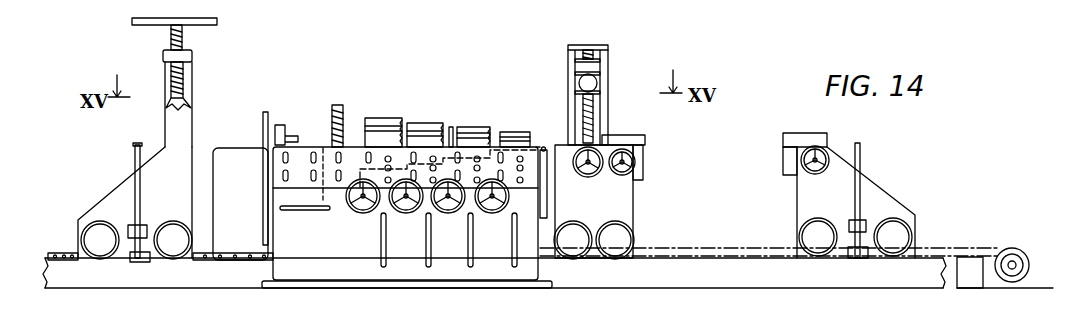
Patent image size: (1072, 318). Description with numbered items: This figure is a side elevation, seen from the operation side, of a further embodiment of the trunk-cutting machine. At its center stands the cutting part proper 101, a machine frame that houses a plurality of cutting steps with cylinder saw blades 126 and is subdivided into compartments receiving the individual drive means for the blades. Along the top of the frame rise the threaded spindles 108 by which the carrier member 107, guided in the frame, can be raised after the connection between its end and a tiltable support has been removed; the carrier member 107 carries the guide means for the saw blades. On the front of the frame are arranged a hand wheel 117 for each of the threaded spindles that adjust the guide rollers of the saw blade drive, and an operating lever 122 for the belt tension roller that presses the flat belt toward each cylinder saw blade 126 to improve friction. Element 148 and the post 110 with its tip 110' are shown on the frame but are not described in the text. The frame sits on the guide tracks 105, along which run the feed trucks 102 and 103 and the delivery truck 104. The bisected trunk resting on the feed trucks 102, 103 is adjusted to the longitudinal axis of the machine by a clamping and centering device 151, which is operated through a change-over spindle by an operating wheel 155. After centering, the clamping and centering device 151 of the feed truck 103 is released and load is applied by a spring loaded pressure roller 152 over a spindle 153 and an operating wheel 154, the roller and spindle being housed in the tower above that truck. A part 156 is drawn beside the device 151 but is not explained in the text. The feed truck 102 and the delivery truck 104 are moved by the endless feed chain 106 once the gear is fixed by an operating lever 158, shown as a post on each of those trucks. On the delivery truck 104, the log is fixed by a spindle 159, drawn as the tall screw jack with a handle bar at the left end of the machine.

The cutting part proper 101 is at (345, 267).
The feed truck 102 is at (848, 202).
The feed truck 103 is at (612, 216).
The delivery truck 104 is at (107, 209).
The guide tracks 105 is at (111, 286).
The endless feed chain 106 is at (971, 259).
The carrier member 107 is at (331, 210).
The threaded spindles 108 is at (333, 115).
The post 110 is at (561, 172).
The post tip 110' is at (548, 132).
The hand wheel 117 is at (357, 209).
The operating lever 122 is at (426, 255).
The cylinder saw blade 126 is at (388, 117).
The block 148 is at (450, 123).
The clamping and centering device 151 is at (627, 135).
The spring loaded pressure roller 152 is at (580, 83).
The spindle 153 is at (583, 101).
The operating wheel 154 is at (586, 177).
The operating wheel 155 is at (619, 176).
The bracket 156 is at (644, 153).
The operating lever 158 is at (132, 155).
The spindle 159 is at (183, 92).